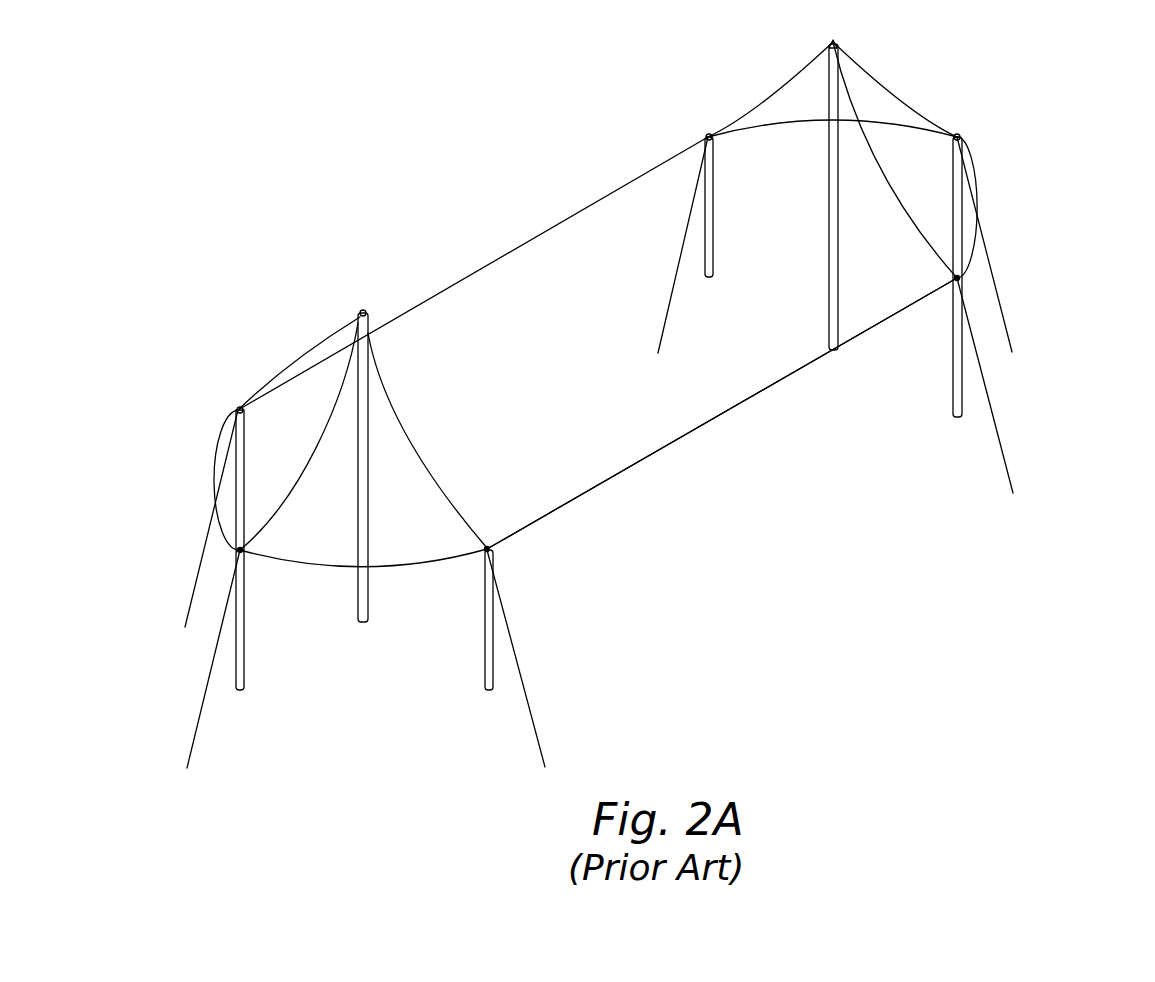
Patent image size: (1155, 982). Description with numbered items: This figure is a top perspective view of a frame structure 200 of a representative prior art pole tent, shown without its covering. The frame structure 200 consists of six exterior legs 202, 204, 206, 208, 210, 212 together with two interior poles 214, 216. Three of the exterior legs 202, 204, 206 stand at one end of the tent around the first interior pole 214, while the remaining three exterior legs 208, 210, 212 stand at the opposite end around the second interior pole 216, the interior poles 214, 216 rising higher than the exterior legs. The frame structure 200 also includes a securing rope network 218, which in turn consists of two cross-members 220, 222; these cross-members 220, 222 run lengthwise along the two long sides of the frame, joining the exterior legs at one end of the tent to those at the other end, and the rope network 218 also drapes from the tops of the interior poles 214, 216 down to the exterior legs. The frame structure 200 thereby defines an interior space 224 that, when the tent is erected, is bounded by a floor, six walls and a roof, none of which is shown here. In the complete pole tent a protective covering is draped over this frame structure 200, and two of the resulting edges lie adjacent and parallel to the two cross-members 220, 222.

The frame structure 200 is at (460, 210).
The exterior leg 202 is at (485, 662).
The exterior leg 204 is at (246, 637).
The exterior leg 206 is at (244, 475).
The exterior leg 208 is at (713, 198).
The exterior leg 210 is at (962, 228).
The exterior leg 212 is at (953, 377).
The interior pole 214 is at (369, 492).
The interior pole 216 is at (828, 260).
The securing rope network 218 is at (878, 98).
The cross-member 220 is at (725, 415).
The cross-member 222 is at (555, 225).
The interior space 224 is at (615, 438).